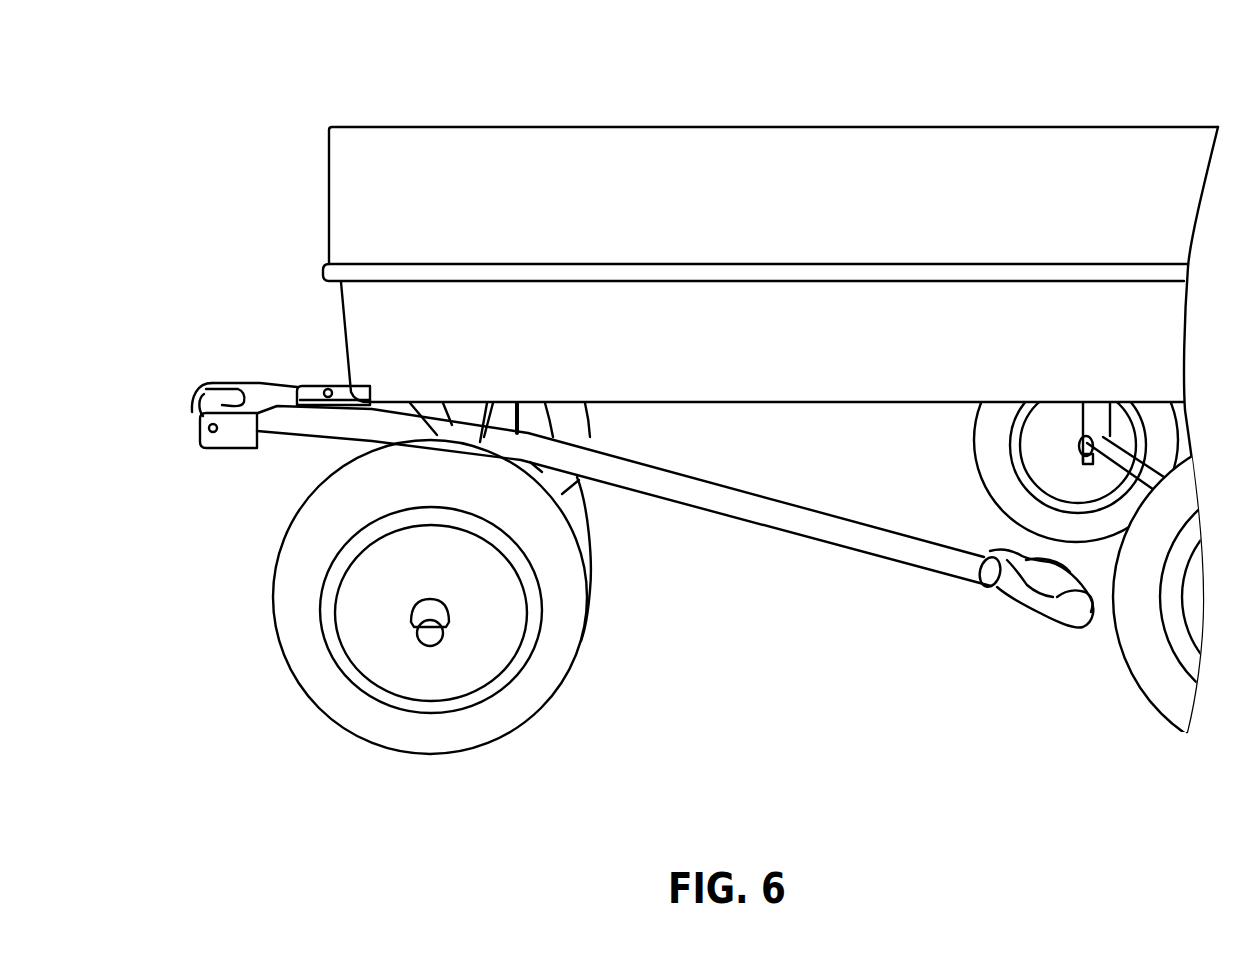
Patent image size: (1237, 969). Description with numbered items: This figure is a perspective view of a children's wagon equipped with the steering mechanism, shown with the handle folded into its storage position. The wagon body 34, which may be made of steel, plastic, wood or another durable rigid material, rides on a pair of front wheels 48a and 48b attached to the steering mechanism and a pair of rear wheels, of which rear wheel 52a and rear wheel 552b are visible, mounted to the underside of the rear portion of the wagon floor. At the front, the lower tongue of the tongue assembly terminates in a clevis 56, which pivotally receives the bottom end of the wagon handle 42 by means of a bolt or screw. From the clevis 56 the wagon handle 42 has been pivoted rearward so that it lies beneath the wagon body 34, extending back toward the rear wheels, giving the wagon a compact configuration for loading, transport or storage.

The body 34 is at (818, 126).
The wagon handle 42 is at (777, 528).
The front wheel 48a is at (420, 732).
The front wheel 48b is at (566, 492).
The rear wheel 52a is at (1160, 689).
The rear wheel 552b is at (1000, 462).
The clevis 56 is at (207, 432).